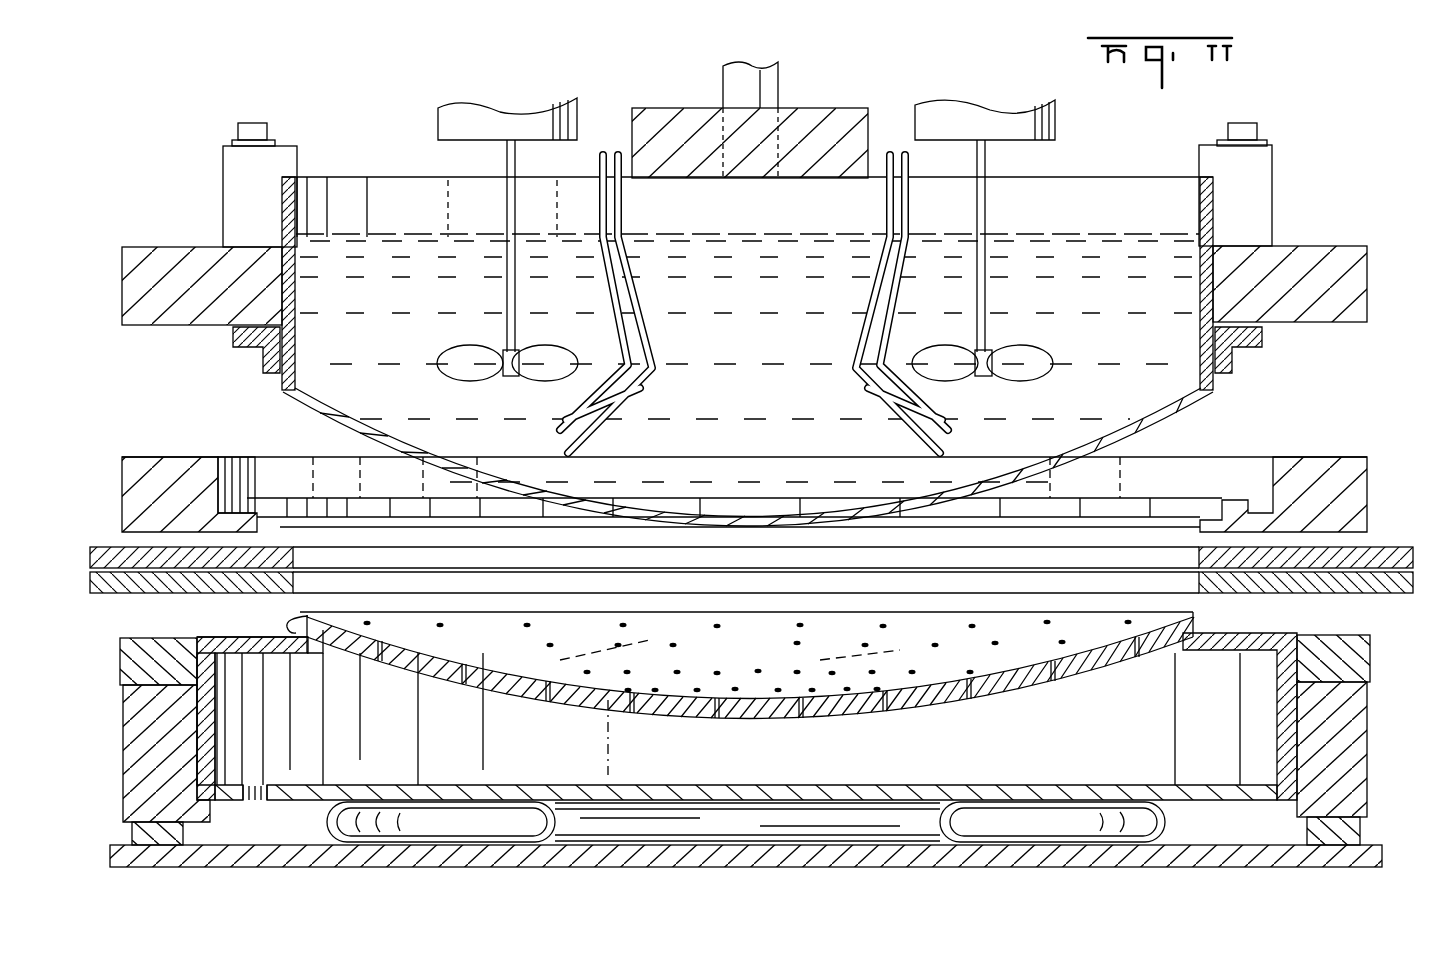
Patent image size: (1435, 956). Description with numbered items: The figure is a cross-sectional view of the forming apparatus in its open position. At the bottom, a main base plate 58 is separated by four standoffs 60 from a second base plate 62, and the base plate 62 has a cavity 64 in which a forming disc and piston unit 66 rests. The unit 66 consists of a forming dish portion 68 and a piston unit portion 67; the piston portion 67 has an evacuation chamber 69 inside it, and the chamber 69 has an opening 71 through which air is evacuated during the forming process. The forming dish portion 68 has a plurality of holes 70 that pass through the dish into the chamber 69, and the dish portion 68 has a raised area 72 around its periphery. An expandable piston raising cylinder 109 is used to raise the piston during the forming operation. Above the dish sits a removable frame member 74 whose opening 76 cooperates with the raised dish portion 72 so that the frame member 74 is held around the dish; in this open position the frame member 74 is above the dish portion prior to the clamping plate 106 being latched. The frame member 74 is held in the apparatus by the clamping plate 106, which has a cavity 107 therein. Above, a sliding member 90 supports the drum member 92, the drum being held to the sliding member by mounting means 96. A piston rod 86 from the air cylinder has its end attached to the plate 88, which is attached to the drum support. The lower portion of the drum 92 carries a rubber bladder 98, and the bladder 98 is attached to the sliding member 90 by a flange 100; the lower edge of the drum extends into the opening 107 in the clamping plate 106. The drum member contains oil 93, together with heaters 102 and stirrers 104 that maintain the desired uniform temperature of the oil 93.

The main base plate 58 is at (115, 846).
The standoffs 60 is at (130, 752).
The second base plate 62 is at (128, 648).
The cavity 64 is at (225, 640).
The forming disc and piston unit 66 is at (252, 637).
The piston unit portion 67 is at (195, 708).
The forming dish portion 68 is at (636, 648).
The evacuation chamber 69 is at (518, 748).
The holes 70 is at (742, 680).
The opening 71 is at (256, 802).
The raised area 72 is at (304, 606).
The removable frame member 74 is at (95, 546).
The opening 76 is at (1195, 556).
The piston rod 86 is at (732, 84).
The plate 88 is at (660, 115).
The sliding member 90 is at (157, 256).
The drum member 92 is at (1200, 205).
The oil 93 is at (390, 240).
The mounting means 96 is at (232, 172).
The rubber bladder 98 is at (1140, 434).
The flange 100 is at (257, 346).
The heaters 102 is at (657, 335).
The stirrers 104 is at (500, 120).
The clamping plate 106 is at (158, 470).
The cavity 107 is at (335, 500).
The expandable piston raising cylinder 109 is at (448, 850).